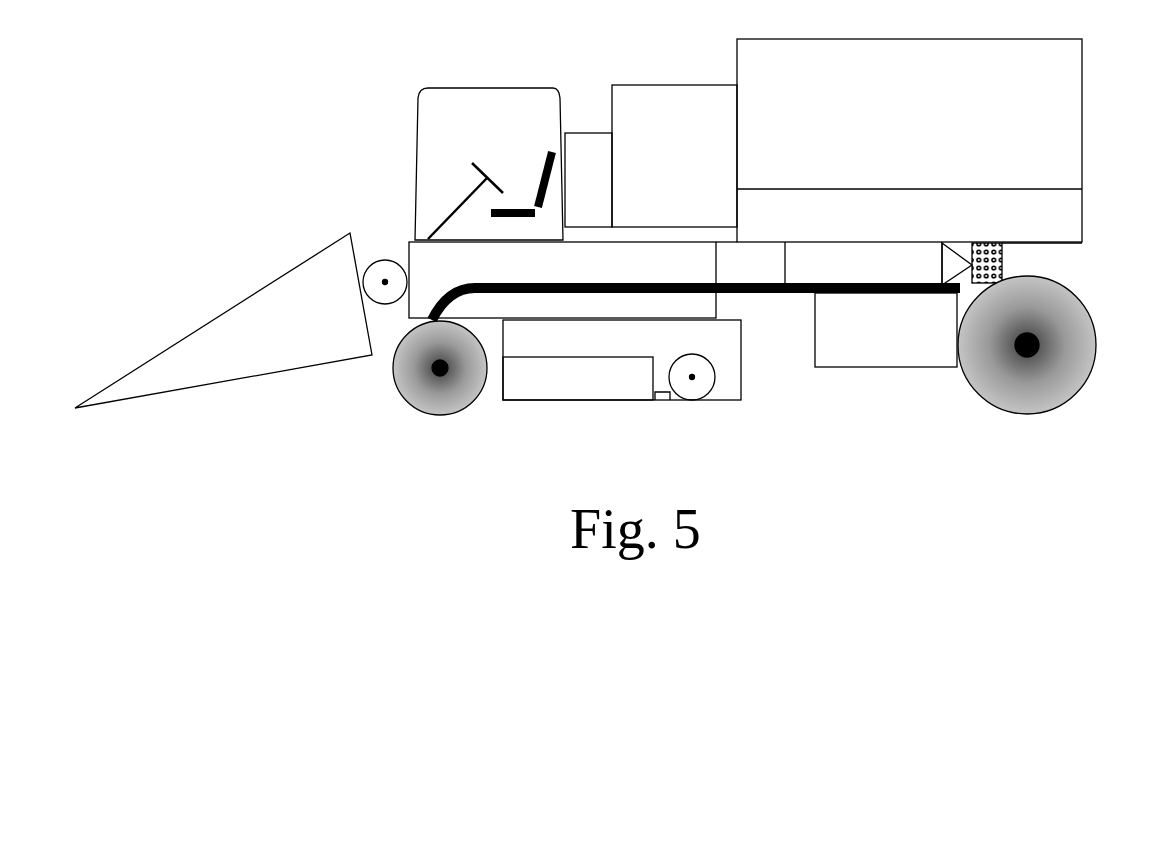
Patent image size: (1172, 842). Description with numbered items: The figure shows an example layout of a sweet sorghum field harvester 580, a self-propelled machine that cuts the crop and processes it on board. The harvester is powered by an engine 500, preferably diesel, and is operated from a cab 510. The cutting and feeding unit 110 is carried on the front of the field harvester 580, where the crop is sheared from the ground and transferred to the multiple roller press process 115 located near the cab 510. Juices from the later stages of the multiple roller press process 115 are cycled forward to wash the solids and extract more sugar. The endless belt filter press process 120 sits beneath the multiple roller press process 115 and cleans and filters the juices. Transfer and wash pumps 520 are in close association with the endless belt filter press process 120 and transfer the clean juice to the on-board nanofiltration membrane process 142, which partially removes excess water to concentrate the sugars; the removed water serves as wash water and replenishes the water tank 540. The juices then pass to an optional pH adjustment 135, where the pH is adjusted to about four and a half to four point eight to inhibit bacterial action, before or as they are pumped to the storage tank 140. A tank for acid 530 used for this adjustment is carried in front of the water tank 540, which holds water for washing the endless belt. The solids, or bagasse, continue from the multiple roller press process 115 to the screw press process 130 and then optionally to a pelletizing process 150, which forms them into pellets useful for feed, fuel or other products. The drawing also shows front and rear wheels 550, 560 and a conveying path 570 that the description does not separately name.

The cutting and feeding unit 110 is at (267, 302).
The multiple roller pressing process 115 is at (619, 281).
The endless belt filter press process 120 is at (509, 356).
The screw press process 130 is at (869, 277).
The pH adjustment 135 is at (532, 392).
The storage tank 140 is at (807, 106).
The nanofiltration membrane process 142 is at (782, 231).
The pelletizing process 150 is at (1004, 268).
The engine 500 is at (857, 344).
The cab 510 is at (482, 144).
The transfer and wash pumps 520 is at (706, 376).
The tank for acid 530 is at (590, 163).
The water tank 540 is at (657, 144).
The front wheel 550 is at (441, 403).
The rear wheel 560 is at (1030, 403).
The conveyor belt 570 is at (798, 295).
The sweet sorghum field harvester 580 is at (815, 484).